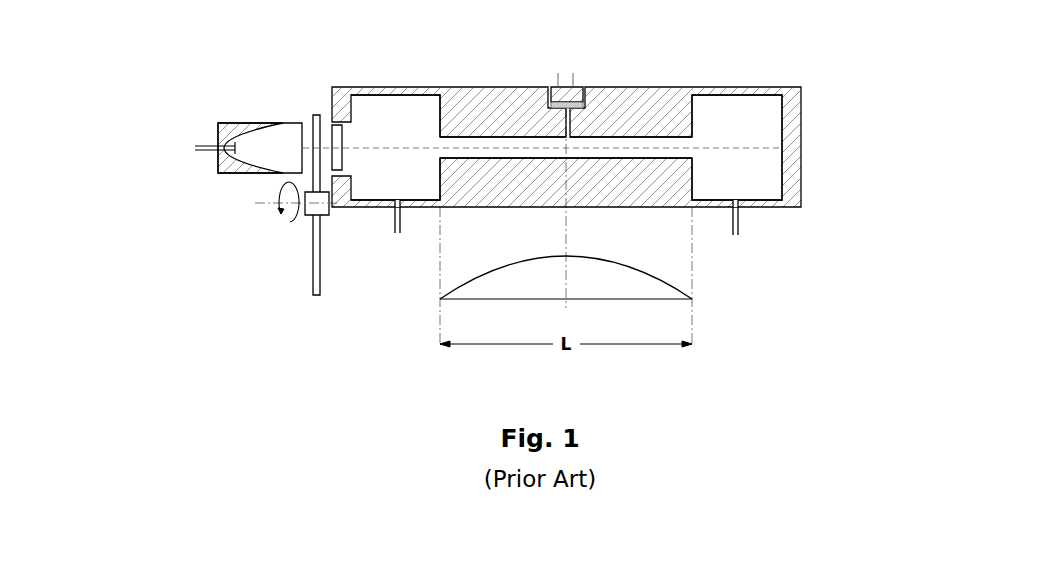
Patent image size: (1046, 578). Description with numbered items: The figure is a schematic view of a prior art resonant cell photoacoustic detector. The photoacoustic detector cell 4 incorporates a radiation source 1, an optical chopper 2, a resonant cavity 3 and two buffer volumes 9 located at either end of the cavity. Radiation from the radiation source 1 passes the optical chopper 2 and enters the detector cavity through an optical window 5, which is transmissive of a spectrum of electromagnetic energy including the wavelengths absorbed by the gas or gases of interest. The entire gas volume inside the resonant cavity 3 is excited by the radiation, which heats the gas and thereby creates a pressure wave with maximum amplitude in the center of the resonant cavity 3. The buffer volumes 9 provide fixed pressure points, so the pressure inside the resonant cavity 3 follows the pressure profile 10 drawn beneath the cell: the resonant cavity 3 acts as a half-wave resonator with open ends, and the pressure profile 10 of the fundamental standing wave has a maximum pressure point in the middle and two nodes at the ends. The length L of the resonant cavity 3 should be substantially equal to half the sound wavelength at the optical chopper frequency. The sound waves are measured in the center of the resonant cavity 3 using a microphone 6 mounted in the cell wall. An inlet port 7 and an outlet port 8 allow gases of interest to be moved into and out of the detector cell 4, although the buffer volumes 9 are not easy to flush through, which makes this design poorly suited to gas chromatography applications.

The radiation source 1 is at (242, 128).
The optical chopper 2 is at (318, 258).
The resonant cavity 3 is at (652, 140).
The photoacoustic detector cell 4 is at (480, 87).
The optical window 5 is at (337, 130).
The microphone 6 is at (572, 95).
The inlet port 7 is at (392, 227).
The outlet port 8 is at (738, 220).
The buffer volumes 9 is at (395, 110).
The pressure profile 10 is at (638, 270).